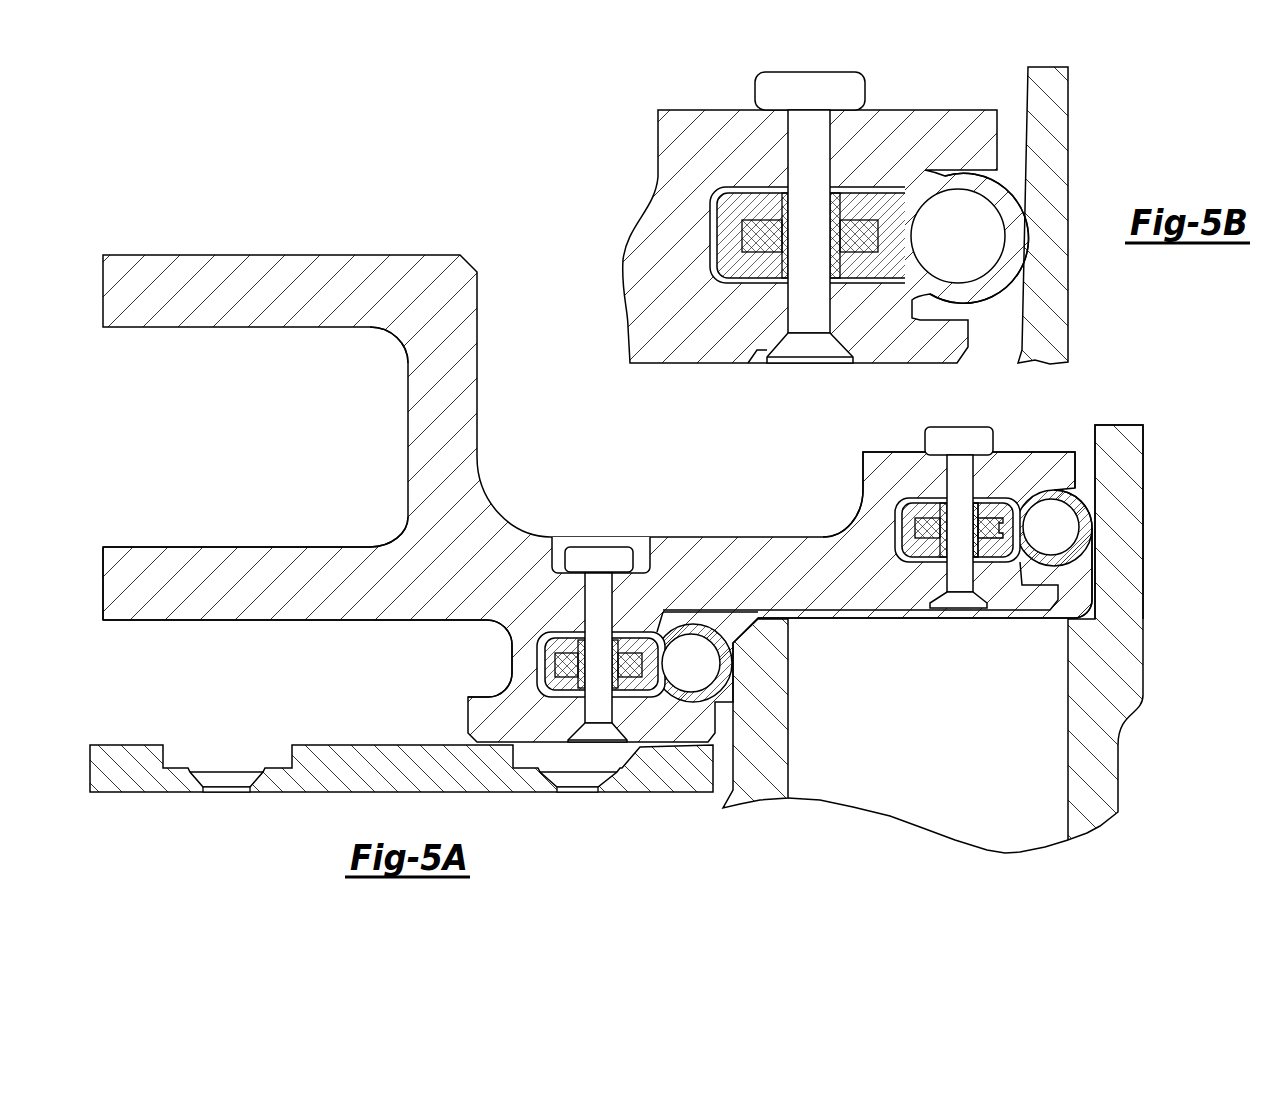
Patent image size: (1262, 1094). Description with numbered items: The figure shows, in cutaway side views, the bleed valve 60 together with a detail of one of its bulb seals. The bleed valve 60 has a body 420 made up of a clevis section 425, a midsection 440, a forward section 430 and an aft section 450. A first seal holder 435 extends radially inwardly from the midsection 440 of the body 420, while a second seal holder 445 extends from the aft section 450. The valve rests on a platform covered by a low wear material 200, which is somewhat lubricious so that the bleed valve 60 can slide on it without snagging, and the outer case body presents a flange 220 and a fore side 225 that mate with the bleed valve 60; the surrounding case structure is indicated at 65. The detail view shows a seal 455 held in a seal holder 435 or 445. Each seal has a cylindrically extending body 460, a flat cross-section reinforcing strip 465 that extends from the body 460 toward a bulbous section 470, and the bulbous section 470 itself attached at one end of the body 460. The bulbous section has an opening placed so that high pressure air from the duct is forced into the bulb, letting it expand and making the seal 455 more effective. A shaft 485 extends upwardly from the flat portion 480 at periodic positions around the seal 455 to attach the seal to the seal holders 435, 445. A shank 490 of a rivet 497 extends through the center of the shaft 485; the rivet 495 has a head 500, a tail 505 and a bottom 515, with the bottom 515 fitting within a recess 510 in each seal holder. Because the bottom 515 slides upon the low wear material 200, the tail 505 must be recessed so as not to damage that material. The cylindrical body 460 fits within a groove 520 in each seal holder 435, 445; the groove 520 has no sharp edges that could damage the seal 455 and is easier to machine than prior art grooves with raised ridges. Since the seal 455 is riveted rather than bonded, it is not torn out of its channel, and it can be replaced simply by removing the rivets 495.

In FIG. 5A, the bleed valve 60 is at (597, 498).
In FIG. 5A, the frame member 65 is at (980, 644).
In FIG. 5A, the low wear material 200 is at (317, 770).
In FIG. 5A, the flange 220 is at (1125, 467).
In FIG. 5B, the flange 220 is at (1099, 215).
In FIG. 5A, the fore side 225 is at (762, 767).
In FIG. 5B, the fore side 225 is at (1058, 92).
In FIG. 5A, the body 420 is at (508, 502).
In FIG. 5A, the clevis section 425 is at (348, 347).
In FIG. 5A, the forward section 430 is at (170, 633).
In FIG. 5A, the first seal holder 435 is at (483, 640).
In FIG. 5A, the midsection 440 is at (668, 527).
In FIG. 5A, the second seal holder 445 is at (837, 513).
In FIG. 5A, the aft section 450 is at (1037, 493).
In FIG. 5A, the seal 455 is at (1087, 525).
In FIG. 5B, the seal 455 is at (1015, 253).
In FIG. 5B, the cylindrically extending body 460 is at (872, 200).
In FIG. 5B, the reinforcing strip 465 is at (752, 287).
In FIG. 5B, the bulbous section 470 is at (1010, 187).
In FIG. 5A, the flat portion 480 is at (995, 532).
In FIG. 5B, the flat portion 480 is at (736, 177).
In FIG. 5A, the shaft 485 is at (940, 508).
In FIG. 5B, the shaft 485 is at (743, 250).
In FIG. 5B, the shank 490 is at (803, 127).
In FIG. 5A, the rivet 495 is at (716, 642).
In FIG. 5B, the rivet 497 is at (863, 70).
In FIG. 5B, the head 500 is at (802, 59).
In FIG. 5B, the tail 505 is at (803, 345).
In FIG. 5B, the recess 510 is at (760, 347).
In FIG. 5A, the bottom 515 is at (548, 740).
In FIG. 5B, the bottom 515 is at (828, 357).
In FIG. 5A, the groove 520 is at (987, 502).
In FIG. 5B, the groove 520 is at (888, 190).